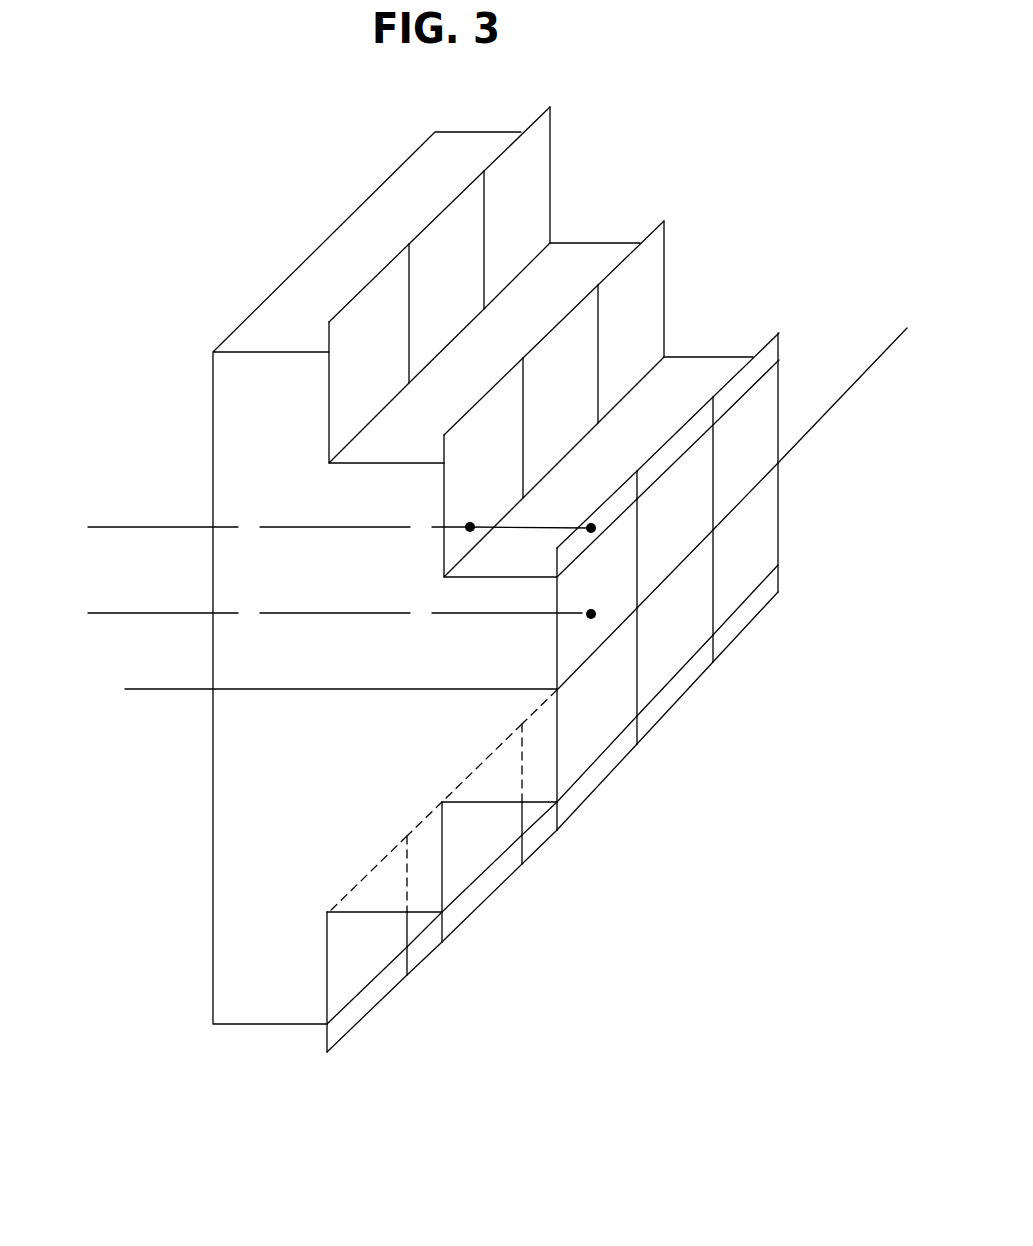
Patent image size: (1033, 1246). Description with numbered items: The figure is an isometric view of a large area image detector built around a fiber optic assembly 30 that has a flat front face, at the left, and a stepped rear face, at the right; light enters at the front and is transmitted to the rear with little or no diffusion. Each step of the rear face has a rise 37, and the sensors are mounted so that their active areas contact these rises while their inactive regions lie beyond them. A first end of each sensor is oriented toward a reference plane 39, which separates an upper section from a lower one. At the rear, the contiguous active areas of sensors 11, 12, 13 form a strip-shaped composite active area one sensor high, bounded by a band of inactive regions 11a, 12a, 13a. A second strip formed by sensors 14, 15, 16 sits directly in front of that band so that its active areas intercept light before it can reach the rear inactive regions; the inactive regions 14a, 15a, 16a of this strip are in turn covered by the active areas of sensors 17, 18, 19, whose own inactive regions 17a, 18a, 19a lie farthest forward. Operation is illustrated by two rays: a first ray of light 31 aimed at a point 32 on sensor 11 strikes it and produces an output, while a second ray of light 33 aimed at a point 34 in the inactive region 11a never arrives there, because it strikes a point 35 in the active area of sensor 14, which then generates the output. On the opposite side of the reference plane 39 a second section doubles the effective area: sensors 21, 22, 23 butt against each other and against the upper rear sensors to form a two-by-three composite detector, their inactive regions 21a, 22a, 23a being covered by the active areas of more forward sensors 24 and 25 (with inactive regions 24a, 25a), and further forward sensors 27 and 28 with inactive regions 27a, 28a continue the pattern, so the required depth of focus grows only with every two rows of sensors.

The sensor 11 is at (597, 619).
The inactive region 11a is at (627, 497).
The sensor 12 is at (675, 539).
The inactive region 12a is at (692, 424).
The sensor 13 is at (745, 431).
The inactive region 13a is at (747, 374).
The sensor 14 is at (483, 506).
The inactive region 14a is at (490, 400).
The sensor 15 is at (560, 428).
The inactive region 15a is at (568, 322).
The sensor 16 is at (631, 322).
The inactive region 16a is at (625, 268).
The sensor 17 is at (369, 392).
The inactive region 17a is at (377, 292).
The sensor 18 is at (446, 313).
The inactive region 18a is at (455, 212).
The sensor 19 is at (517, 208).
The inactive region 19a is at (510, 160).
The sensor 21 is at (591, 754).
The inactive region 21a is at (610, 760).
The sensor 22 is at (666, 673).
The inactive region 22a is at (680, 683).
The sensor 23 is at (745, 562).
The inactive region 23a is at (748, 610).
The sensor 24 is at (482, 833).
The inactive region 24a is at (485, 882).
The sensor 25 is at (527, 717).
The inactive region 25a is at (538, 830).
The sensor 27 is at (367, 944).
The inactive region 27a is at (367, 997).
The sensor 28 is at (407, 826).
The inactive region 28a is at (418, 943).
The fiber optic assembly 30 is at (246, 412).
The first ray of light 31 is at (173, 613).
The point 32 is at (586, 618).
The second ray of light 33 is at (173, 527).
The point 34 is at (586, 532).
The point 35 is at (464, 532).
The rise 37 is at (553, 182).
The reference plane 39 is at (176, 691).